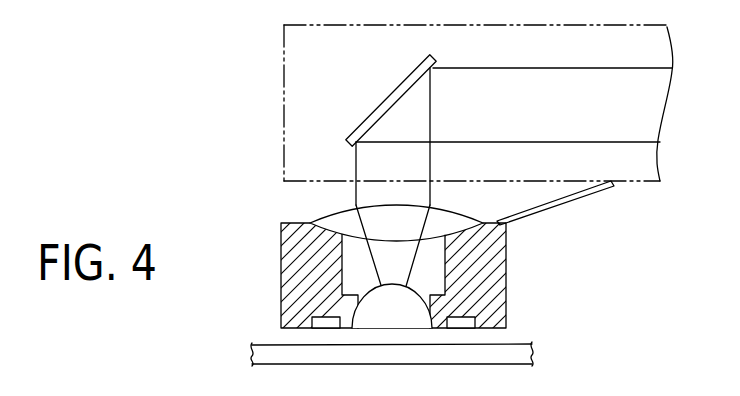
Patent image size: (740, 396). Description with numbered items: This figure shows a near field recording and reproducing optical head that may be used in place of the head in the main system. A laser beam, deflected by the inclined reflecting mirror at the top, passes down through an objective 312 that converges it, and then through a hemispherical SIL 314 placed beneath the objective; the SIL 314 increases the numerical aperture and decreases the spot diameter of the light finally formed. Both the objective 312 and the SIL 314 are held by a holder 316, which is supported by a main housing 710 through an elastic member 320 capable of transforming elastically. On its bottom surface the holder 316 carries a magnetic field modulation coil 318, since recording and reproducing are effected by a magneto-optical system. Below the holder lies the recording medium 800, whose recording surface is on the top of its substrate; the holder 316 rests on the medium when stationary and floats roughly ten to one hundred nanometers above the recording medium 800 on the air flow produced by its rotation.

The main housing 710 is at (283, 93).
The objective 312 is at (455, 213).
The elastic member 320 is at (577, 200).
The holder 316 is at (281, 240).
The magnetic field modulation coil 318 is at (312, 318).
The hemispherical SIL (Solid Immersion Lens) 314 is at (420, 312).
The recording medium 800 is at (513, 343).